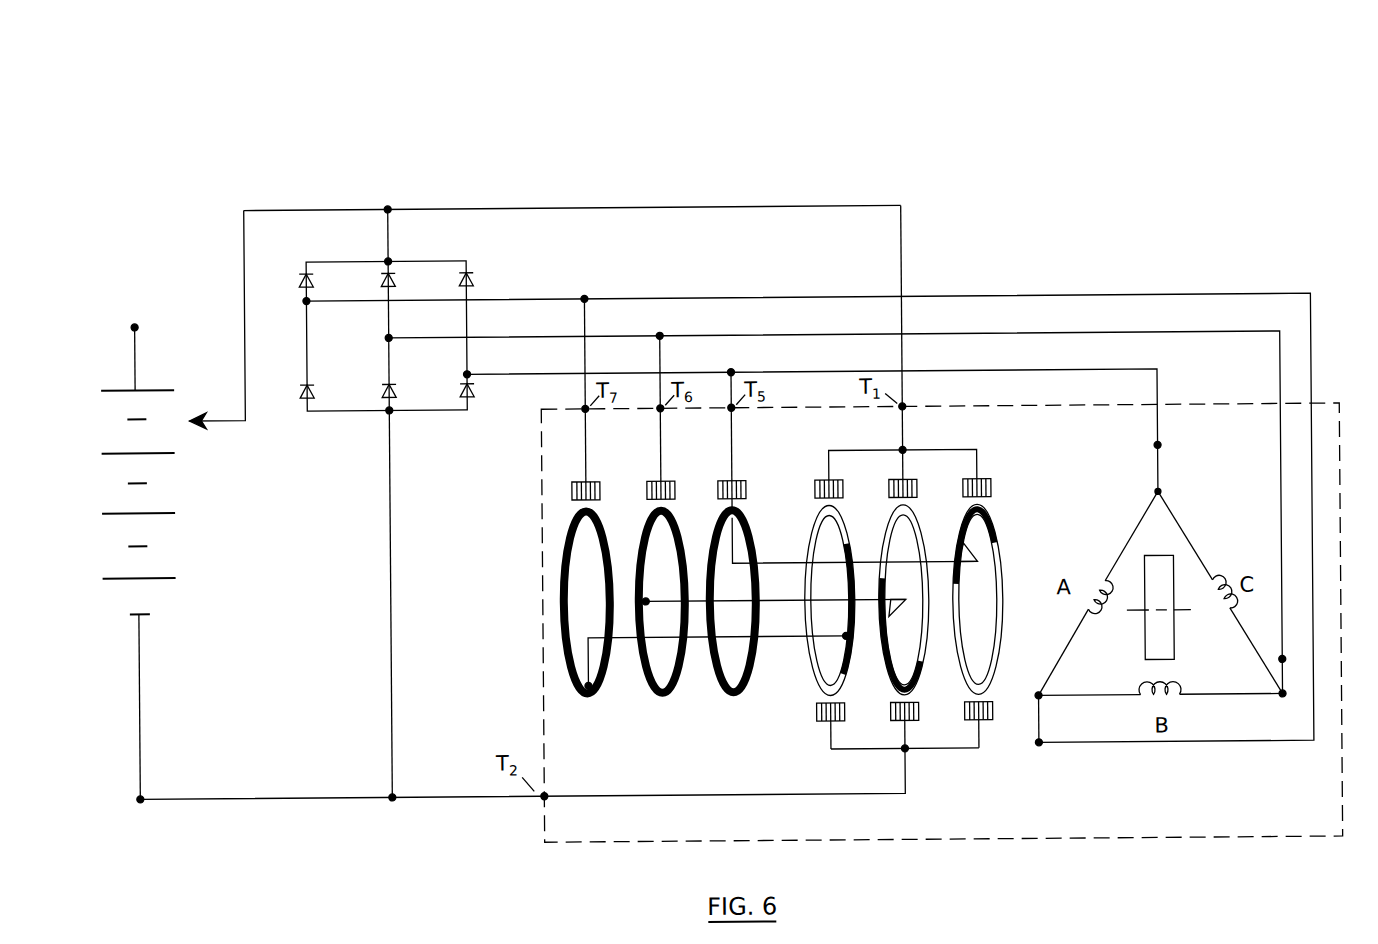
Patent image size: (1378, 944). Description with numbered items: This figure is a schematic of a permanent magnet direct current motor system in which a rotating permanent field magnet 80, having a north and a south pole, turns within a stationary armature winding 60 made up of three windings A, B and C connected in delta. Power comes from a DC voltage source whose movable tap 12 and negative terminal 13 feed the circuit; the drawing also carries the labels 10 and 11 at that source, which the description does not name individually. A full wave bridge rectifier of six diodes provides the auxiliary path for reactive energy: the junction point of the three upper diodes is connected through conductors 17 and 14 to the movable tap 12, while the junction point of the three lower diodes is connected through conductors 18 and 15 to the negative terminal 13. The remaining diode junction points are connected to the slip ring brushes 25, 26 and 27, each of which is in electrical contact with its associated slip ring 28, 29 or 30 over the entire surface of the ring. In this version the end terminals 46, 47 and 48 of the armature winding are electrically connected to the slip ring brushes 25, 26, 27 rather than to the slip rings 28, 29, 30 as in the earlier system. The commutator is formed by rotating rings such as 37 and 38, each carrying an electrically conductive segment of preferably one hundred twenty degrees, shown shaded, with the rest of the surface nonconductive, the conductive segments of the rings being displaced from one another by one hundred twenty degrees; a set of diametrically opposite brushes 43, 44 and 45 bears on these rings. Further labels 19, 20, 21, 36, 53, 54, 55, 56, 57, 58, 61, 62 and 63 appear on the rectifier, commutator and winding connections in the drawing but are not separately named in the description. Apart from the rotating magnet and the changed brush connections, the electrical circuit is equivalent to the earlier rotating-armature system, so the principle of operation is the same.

The battery 10 is at (104, 384).
The positive battery terminal 11 is at (148, 327).
The movable tap 12 is at (198, 426).
The negative terminal 13 is at (150, 793).
The conductor 14 is at (304, 212).
The conductor 15 is at (274, 798).
The conductor 17 is at (397, 245).
The conductor 18 is at (396, 587).
The rectifier junction 19 is at (313, 305).
The rectifier junction 20 is at (394, 342).
The rectifier junction 21 is at (473, 368).
The slip ring brush 25 is at (741, 477).
The slip ring brush 26 is at (667, 477).
The slip ring brush 27 is at (592, 477).
The slip ring 28 is at (707, 534).
The slip ring 29 is at (635, 534).
The slip ring 30 is at (563, 534).
The winding connection conductor 36 is at (771, 567).
The commutator ring 37 is at (771, 605).
The commutator ring 38 is at (771, 641).
The brush 43 is at (965, 727).
The brush 44 is at (894, 727).
The brush 45 is at (817, 727).
The armature winding terminal 46 is at (1167, 448).
The armature winding terminal 47 is at (1029, 752).
The armature winding terminal 48 is at (1284, 657).
The secondary winding 53 is at (951, 533).
The secondary winding 54 is at (877, 533).
The secondary winding 55 is at (801, 534).
The secondary winding terminal 56 is at (986, 478).
The secondary winding terminal 57 is at (913, 478).
The secondary winding terminal 58 is at (839, 478).
The armature winding 60 is at (1198, 697).
The secondary winding assembly 61 is at (924, 440).
The primary winding assembly 62 is at (744, 446).
The rectifier bridge 63 is at (472, 256).
The rotating permanent magnet 80 is at (1179, 645).